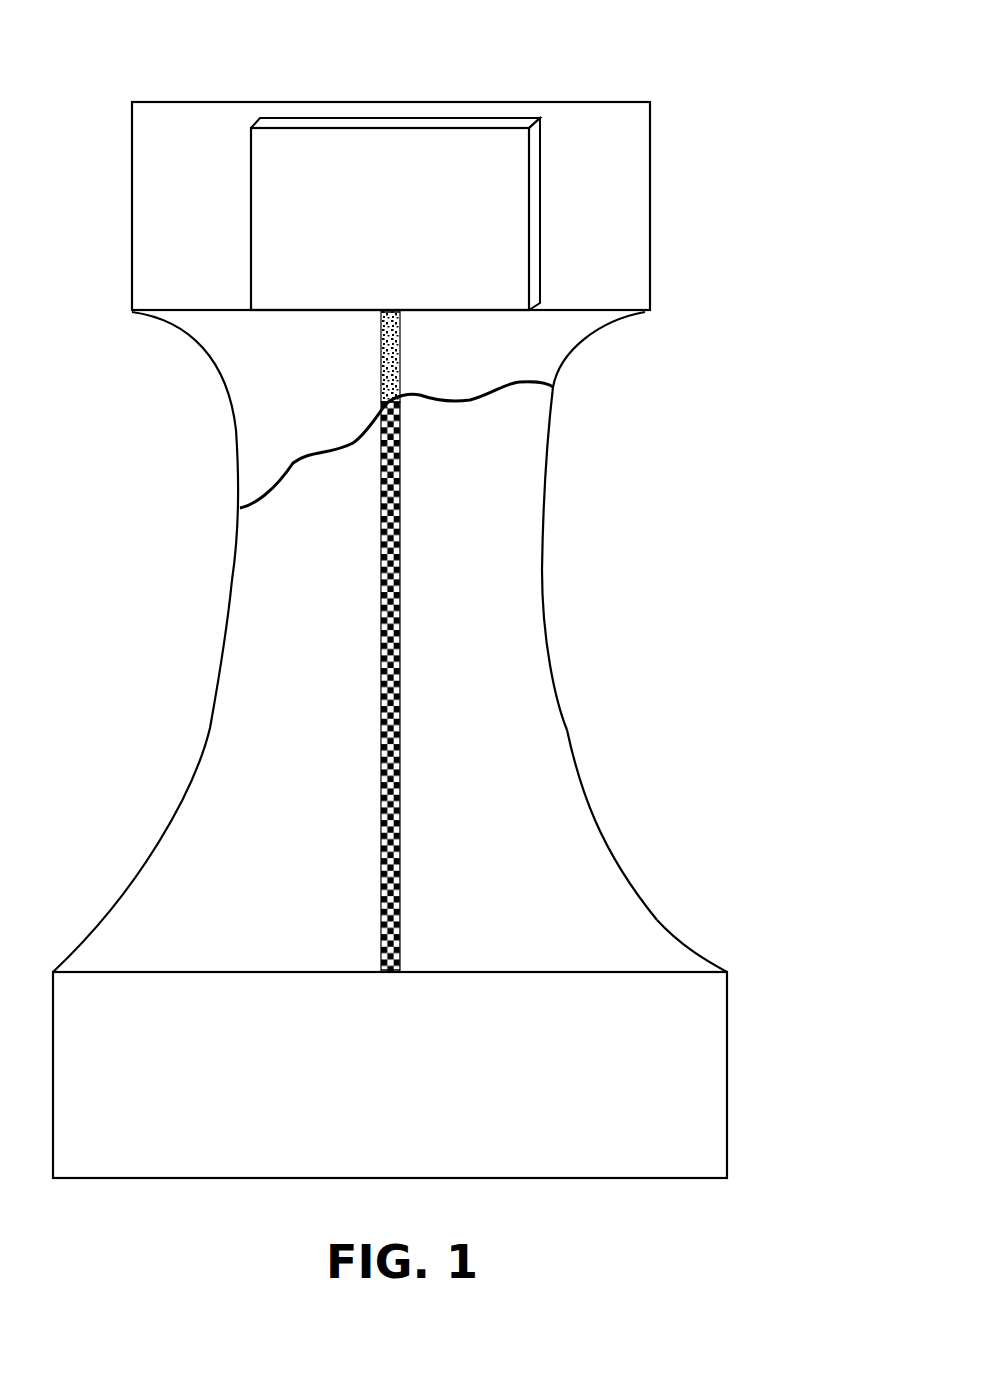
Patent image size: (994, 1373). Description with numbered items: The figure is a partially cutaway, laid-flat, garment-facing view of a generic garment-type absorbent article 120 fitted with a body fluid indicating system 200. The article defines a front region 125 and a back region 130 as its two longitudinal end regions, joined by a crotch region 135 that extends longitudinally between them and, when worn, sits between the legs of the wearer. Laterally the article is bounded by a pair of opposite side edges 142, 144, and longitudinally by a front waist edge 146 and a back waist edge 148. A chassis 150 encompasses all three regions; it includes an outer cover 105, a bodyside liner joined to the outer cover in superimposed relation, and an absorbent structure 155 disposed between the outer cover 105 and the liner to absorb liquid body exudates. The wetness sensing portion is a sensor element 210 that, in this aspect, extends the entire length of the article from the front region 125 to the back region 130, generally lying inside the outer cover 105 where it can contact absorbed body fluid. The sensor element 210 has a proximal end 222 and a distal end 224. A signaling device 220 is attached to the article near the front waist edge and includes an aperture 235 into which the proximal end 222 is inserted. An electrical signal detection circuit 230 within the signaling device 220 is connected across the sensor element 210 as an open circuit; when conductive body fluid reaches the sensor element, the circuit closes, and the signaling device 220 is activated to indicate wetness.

The outer cover 105 is at (278, 402).
The garment-type absorbent article 120 is at (228, 395).
The front region 125 is at (720, 323).
The back region 130 is at (701, 883).
The crotch region 135 is at (608, 626).
The side edge 142 is at (210, 728).
The side edge 144 is at (567, 730).
The front waist edge 146 is at (452, 101).
The back waist edge 148 is at (549, 1180).
The chassis 150 is at (233, 572).
The absorbent structure 155 is at (517, 815).
The body fluid indicating system 200 is at (704, 230).
The sensor element 210 is at (400, 512).
The signaling device 220 is at (541, 184).
The proximal end 222 is at (380, 355).
The distal end 224 is at (400, 931).
The electrical signal detection circuit 230 is at (318, 158).
The aperture 235 is at (400, 316).